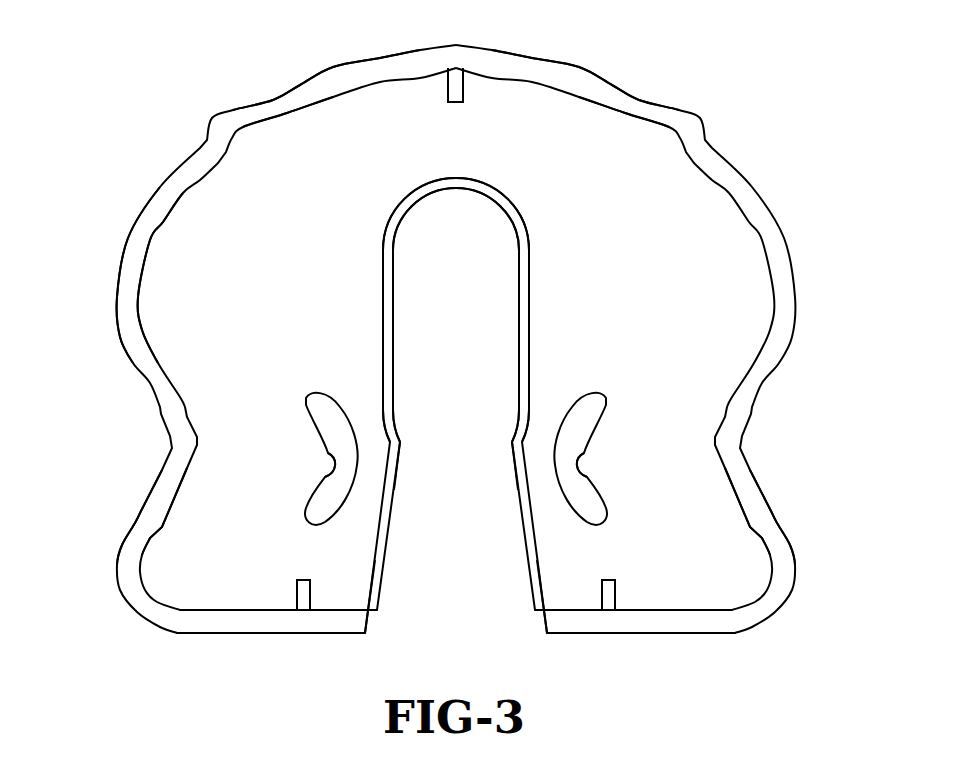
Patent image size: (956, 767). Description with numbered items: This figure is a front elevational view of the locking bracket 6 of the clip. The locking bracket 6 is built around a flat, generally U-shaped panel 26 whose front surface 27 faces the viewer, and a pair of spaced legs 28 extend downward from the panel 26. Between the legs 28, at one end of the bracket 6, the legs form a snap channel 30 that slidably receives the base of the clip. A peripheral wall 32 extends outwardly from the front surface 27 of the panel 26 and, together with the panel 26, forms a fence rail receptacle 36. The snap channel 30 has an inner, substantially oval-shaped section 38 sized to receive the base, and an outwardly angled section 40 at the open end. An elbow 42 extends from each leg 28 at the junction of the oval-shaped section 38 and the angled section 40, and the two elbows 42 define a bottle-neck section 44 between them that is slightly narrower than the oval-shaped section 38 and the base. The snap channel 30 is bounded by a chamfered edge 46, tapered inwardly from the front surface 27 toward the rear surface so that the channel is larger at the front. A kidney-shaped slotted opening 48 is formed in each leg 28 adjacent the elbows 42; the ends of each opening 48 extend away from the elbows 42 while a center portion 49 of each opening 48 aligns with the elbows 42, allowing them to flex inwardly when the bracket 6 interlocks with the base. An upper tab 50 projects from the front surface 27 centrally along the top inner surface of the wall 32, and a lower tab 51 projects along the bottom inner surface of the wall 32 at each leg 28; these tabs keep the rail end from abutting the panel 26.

The locking bracket 6 is at (683, 100).
The panel 26 is at (610, 164).
The front surface 27 is at (180, 288).
The legs 28 is at (220, 496).
The snap channel 30 is at (476, 552).
The peripheral wall 32 is at (574, 86).
The fence rail receptacle 36 is at (280, 170).
The oval-shaped section 38 is at (423, 222).
The outwardly angled section 40 is at (440, 558).
The elbow 42 is at (400, 445).
The bottle-neck section 44 is at (467, 447).
The chamfered edge 46 is at (390, 303).
The kidney-shaped slotted opening 48 is at (328, 458).
The center portion 49 is at (359, 462).
The upper tab 50 is at (458, 90).
The lower tab 51 is at (299, 594).